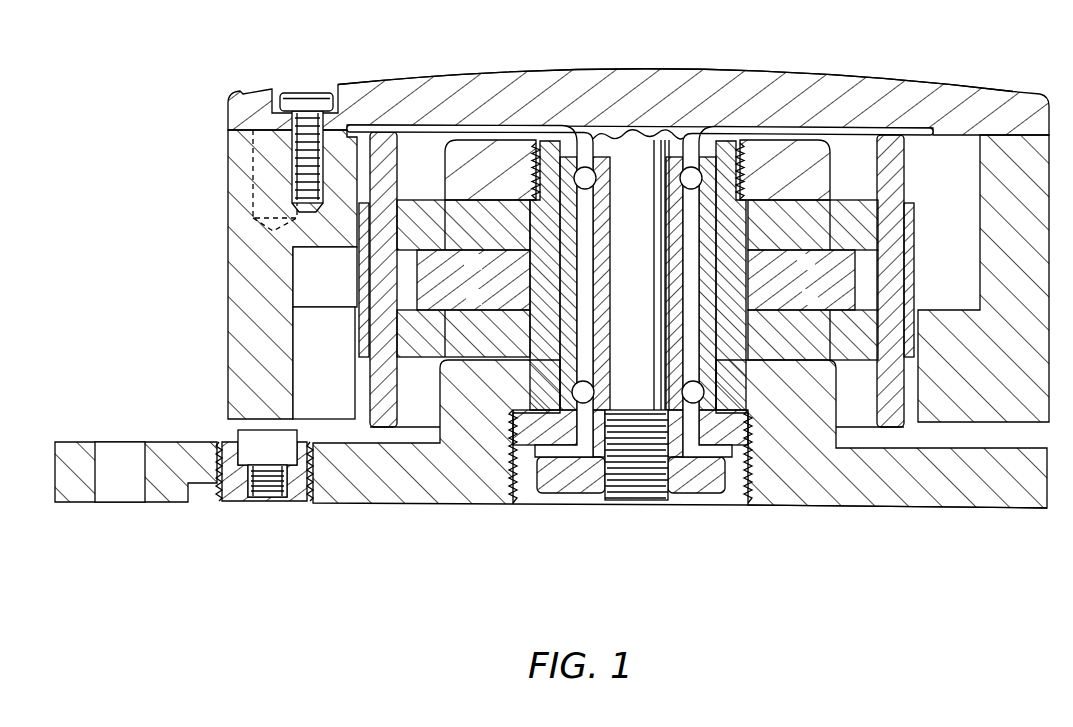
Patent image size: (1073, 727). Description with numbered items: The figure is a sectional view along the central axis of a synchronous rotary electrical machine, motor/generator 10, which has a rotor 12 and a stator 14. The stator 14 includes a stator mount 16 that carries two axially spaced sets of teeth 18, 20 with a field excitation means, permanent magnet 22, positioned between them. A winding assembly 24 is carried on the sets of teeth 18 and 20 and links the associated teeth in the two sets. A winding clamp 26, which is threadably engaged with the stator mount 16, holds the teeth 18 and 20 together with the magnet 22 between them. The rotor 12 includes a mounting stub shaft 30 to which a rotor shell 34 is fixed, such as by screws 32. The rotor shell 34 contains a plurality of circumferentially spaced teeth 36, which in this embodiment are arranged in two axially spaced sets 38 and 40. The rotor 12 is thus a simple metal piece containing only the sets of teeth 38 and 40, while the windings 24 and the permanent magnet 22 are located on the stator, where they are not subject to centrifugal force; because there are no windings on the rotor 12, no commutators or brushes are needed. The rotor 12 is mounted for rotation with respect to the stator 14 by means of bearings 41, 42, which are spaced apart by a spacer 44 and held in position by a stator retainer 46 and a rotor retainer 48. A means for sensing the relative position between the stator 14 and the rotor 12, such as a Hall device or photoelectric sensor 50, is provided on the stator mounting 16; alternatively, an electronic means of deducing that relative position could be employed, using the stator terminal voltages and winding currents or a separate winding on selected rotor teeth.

The motor/generator 10 is at (552, 271).
The rotor 12 is at (760, 66).
The stator 14 is at (981, 510).
The stator mount 16 is at (813, 497).
The set of teeth 18 is at (853, 211).
The set of teeth 20 is at (860, 354).
The permanent magnet 22 is at (850, 281).
The winding assembly 24 is at (897, 147).
The winding clamp 26 is at (464, 153).
The mounting stub shaft 30 is at (694, 90).
The screws 32 is at (310, 95).
The rotor shell 34 is at (241, 246).
The teeth 36 is at (240, 185).
The set of teeth 38 is at (340, 243).
The set of teeth 40 is at (330, 318).
The bearing 41 is at (685, 183).
The bearing 42 is at (682, 394).
The spacer 44 is at (672, 287).
The stator retainer 46 is at (524, 468).
The rotor retainer 48 is at (703, 492).
The photoelectric sensor 50 is at (250, 435).